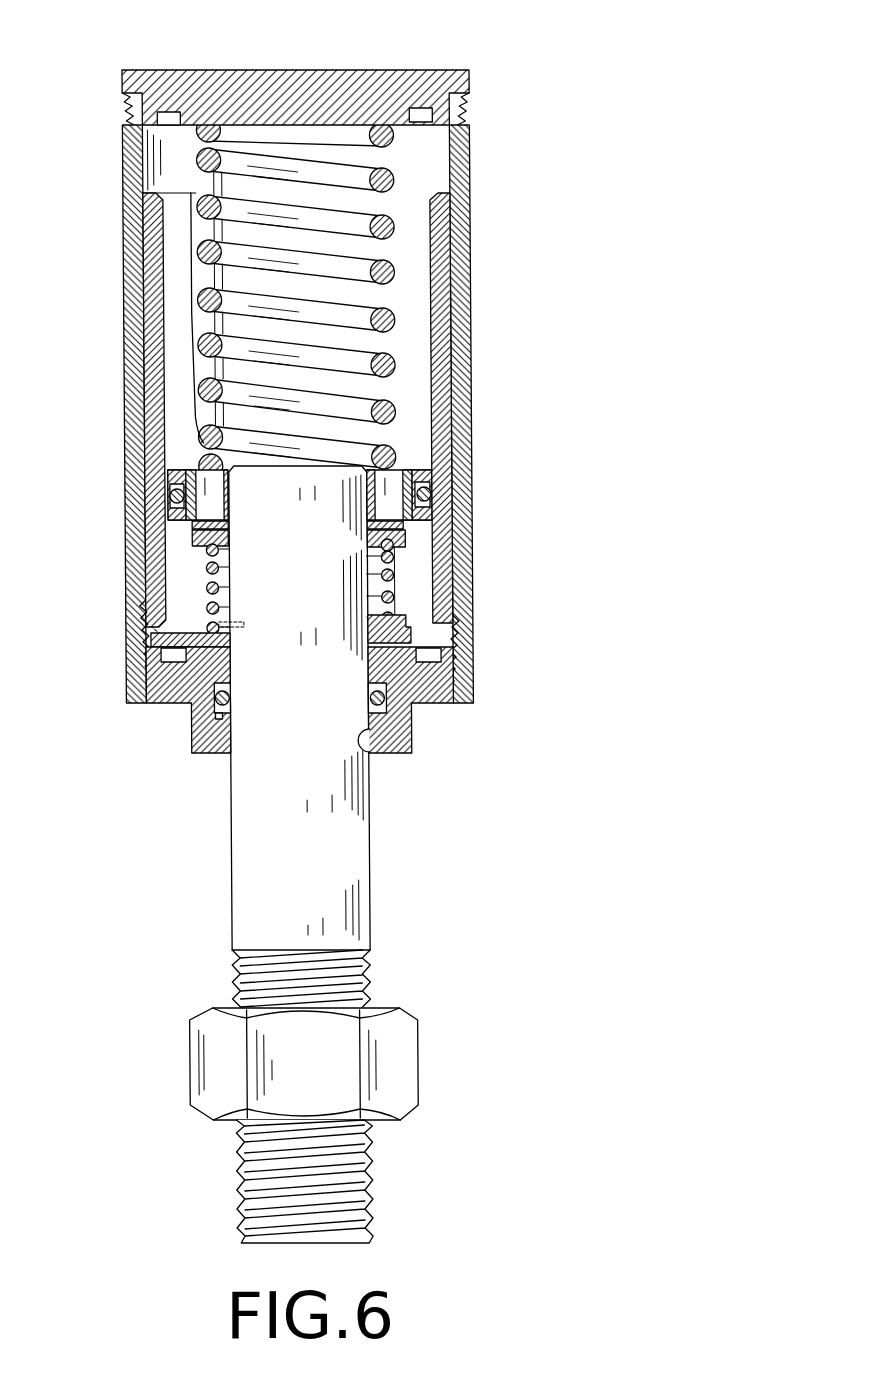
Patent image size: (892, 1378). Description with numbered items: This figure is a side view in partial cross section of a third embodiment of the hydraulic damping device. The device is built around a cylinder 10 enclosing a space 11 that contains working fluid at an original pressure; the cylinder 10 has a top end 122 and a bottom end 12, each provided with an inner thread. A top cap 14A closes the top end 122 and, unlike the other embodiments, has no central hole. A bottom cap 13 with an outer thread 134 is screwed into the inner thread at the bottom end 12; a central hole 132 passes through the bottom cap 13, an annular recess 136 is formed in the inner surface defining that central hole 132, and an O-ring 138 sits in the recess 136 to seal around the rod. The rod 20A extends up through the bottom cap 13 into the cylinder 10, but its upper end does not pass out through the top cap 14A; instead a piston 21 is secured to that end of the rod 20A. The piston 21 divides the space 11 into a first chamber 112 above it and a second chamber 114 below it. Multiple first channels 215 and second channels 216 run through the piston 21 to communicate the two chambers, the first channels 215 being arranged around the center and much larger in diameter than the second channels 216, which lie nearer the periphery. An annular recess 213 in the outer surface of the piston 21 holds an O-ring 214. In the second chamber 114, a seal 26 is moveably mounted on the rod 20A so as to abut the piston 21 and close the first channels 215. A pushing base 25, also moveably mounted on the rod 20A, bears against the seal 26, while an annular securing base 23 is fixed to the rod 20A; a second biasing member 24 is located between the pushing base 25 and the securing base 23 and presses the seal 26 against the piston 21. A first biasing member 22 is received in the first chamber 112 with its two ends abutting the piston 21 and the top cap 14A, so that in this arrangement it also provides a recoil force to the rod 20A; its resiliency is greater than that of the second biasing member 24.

The top cap 14A is at (403, 78).
The top end 122 is at (143, 118).
The first biasing member 22 is at (397, 178).
The cylinder 10 is at (475, 257).
The first chamber 112 is at (416, 355).
The space 11 is at (176, 348).
The second channels 216 is at (432, 466).
The piston 21 is at (303, 499).
The O-ring 214 is at (175, 498).
The seal 26 is at (430, 524).
The first channels 215 is at (372, 500).
The pushing base 25 is at (415, 545).
The annular recess 213 is at (178, 508).
The second biasing member 24 is at (400, 597).
The second chamber 114 is at (183, 597).
The bottom end 12 is at (140, 630).
The annular securing base 23 is at (415, 636).
The outer thread 134 is at (145, 663).
The bottom cap 13 is at (329, 734).
The O-ring 138 is at (215, 712).
The annular recess 136 is at (220, 717).
The central hole 132 is at (365, 752).
The rod 20A is at (354, 862).